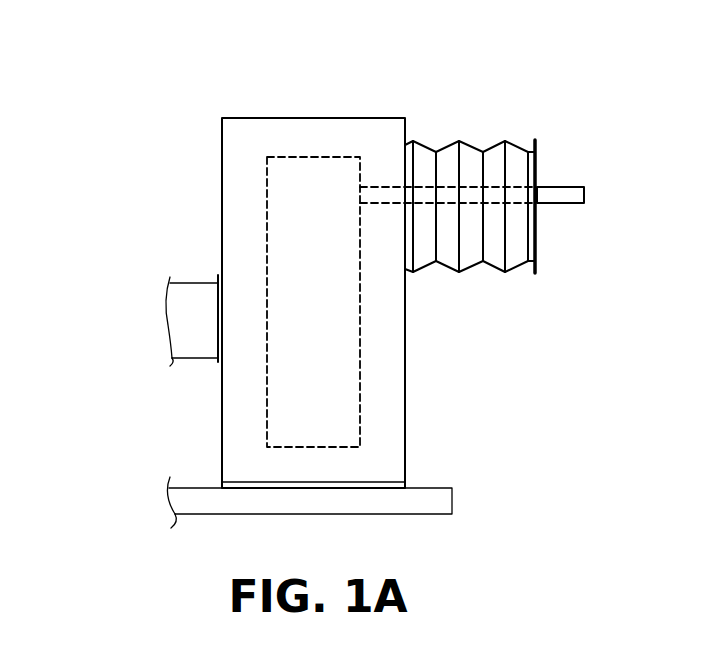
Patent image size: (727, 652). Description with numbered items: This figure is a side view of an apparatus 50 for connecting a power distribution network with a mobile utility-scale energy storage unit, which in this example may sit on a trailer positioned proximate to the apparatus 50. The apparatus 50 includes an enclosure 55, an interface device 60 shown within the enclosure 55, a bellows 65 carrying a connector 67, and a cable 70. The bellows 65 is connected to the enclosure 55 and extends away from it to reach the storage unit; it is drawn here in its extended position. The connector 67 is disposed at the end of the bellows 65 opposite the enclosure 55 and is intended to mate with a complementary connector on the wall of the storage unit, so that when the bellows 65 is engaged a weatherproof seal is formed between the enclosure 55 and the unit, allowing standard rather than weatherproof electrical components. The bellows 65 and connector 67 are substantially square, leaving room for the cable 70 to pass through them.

The apparatus 50 is at (95, 86).
The enclosure 55 is at (313, 117).
The interface device 60 is at (298, 318).
The bellows 65 is at (471, 143).
The connector 67 is at (538, 150).
The cable 70 is at (572, 186).